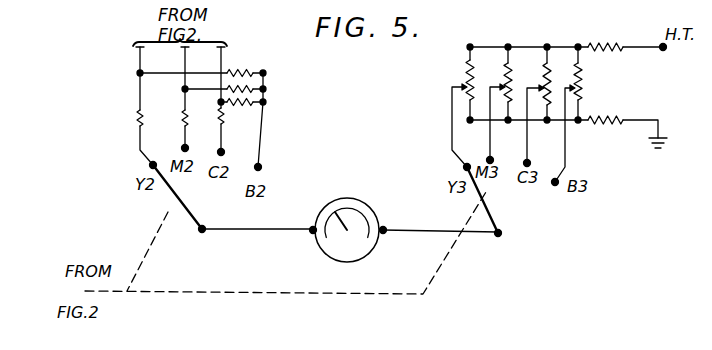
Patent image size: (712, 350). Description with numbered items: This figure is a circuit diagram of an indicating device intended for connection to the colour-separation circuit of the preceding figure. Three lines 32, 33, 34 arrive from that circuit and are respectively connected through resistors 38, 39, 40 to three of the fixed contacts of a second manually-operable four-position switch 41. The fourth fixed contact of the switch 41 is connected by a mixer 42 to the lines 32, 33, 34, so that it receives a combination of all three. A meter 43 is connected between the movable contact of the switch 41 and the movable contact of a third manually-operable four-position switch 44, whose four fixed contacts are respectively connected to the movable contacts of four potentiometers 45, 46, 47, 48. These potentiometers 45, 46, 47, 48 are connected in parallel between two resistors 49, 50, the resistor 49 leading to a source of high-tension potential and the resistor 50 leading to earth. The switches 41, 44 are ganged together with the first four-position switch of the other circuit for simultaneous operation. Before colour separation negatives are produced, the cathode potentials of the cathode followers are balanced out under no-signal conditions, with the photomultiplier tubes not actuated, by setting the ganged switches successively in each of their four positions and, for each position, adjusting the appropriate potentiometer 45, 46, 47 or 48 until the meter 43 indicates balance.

The line 32 is at (140, 67).
The line 33 is at (185, 67).
The line 34 is at (221, 63).
The resistor 38 is at (137, 118).
The resistor 39 is at (182, 118).
The resistor 40 is at (218, 116).
The second manually-operable four-position switch 41 is at (180, 205).
The mixer 42 is at (263, 89).
The meter 43 is at (352, 260).
The third manually-operable four-position switch 44 is at (528, 188).
The potentiometer 45 is at (468, 72).
The potentiometer 46 is at (506, 72).
The potentiometer 47 is at (546, 72).
The potentiometer 48 is at (577, 70).
The resistor 49 is at (606, 49).
The resistor 50 is at (608, 118).